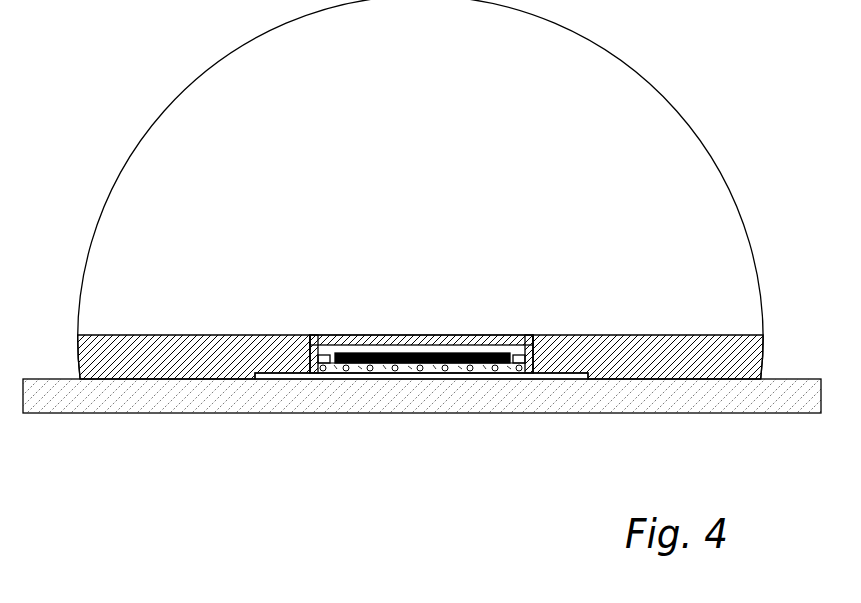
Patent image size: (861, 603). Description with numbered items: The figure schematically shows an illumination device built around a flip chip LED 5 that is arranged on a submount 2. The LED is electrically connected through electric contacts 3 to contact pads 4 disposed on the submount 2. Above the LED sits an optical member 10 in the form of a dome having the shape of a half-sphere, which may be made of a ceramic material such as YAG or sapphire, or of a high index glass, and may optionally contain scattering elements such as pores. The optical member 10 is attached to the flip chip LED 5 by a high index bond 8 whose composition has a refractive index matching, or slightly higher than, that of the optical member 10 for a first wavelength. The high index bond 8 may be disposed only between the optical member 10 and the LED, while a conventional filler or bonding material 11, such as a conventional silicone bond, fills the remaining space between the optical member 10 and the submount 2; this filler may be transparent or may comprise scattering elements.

The submount 2 is at (478, 398).
The electric contacts 3 is at (372, 376).
The contact pads 4 is at (294, 376).
The flip chip LED 5 is at (490, 352).
The high index bond 8 is at (340, 340).
The optical member 10 is at (748, 278).
The conventional filler or bonding material 11 is at (92, 361).